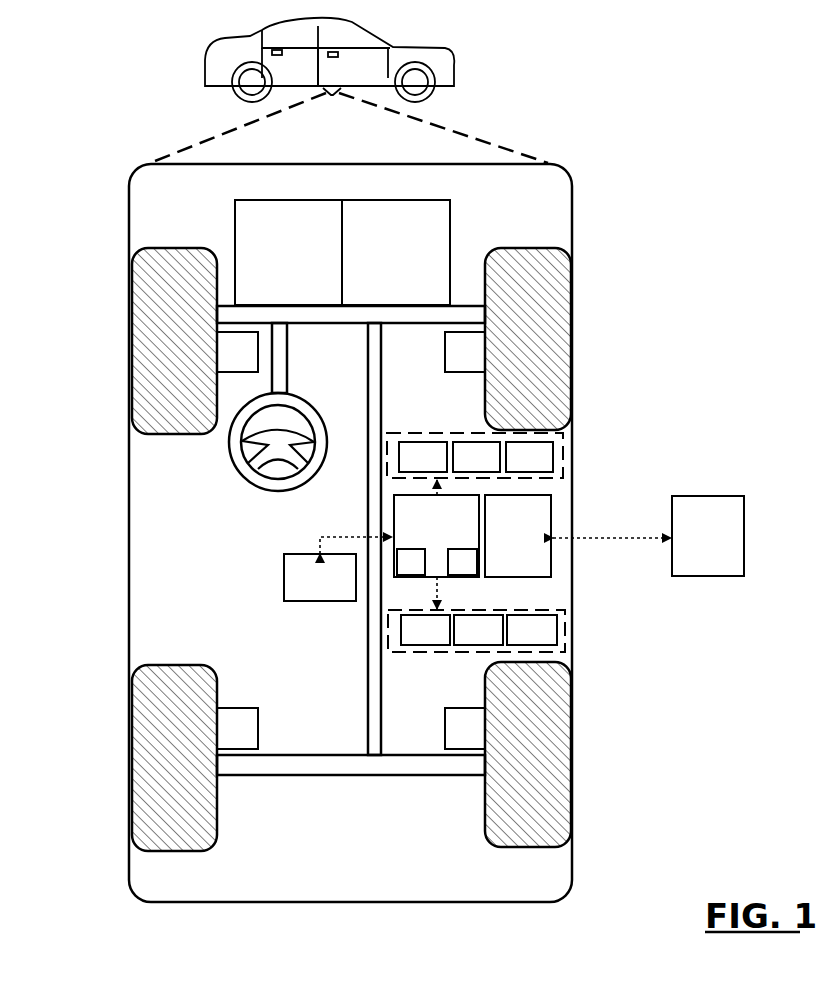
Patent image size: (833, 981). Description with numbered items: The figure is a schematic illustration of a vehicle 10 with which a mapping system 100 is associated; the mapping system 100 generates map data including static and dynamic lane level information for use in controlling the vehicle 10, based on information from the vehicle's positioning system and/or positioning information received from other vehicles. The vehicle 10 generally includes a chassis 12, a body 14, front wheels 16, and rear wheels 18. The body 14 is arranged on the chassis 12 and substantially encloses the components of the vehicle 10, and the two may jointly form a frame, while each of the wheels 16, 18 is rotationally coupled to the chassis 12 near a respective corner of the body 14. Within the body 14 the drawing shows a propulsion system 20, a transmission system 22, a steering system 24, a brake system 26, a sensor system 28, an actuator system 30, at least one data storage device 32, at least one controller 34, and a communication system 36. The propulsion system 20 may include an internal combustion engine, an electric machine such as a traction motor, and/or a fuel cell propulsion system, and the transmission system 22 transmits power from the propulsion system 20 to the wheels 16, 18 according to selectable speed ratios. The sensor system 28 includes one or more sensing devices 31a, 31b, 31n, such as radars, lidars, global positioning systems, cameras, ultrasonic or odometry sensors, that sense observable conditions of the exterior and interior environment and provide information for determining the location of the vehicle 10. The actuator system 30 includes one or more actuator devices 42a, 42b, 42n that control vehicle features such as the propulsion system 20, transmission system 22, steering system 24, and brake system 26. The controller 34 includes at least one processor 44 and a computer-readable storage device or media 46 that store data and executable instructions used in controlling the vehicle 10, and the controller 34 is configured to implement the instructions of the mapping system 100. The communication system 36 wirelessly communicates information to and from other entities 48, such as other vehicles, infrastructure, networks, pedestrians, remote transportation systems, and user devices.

The vehicle 10 is at (206, 65).
The mapping system 100 is at (598, 178).
The chassis 12 is at (368, 690).
The body 14 is at (129, 520).
The front wheels 16 is at (170, 248).
The rear wheels 18 is at (190, 851).
The propulsion system 20 is at (277, 263).
The transmission system 22 is at (385, 263).
The steering system 24 is at (312, 351).
The brake system 26 is at (225, 363).
The sensor system 28 is at (402, 432).
The actuator system 30 is at (437, 652).
The sensing device 31a is at (440, 468).
The sensing device 31b is at (494, 468).
The sensing device 31n is at (547, 468).
The data storage device 32 is at (308, 589).
The controller 34 is at (424, 548).
The communication system 36 is at (506, 548).
The actuator device 42a is at (442, 641).
The actuator device 42b is at (495, 641).
The actuator device 42n is at (549, 641).
The processor 44 is at (401, 572).
The computer-readable storage device or media 46 is at (453, 572).
The other entities 48 is at (696, 548).